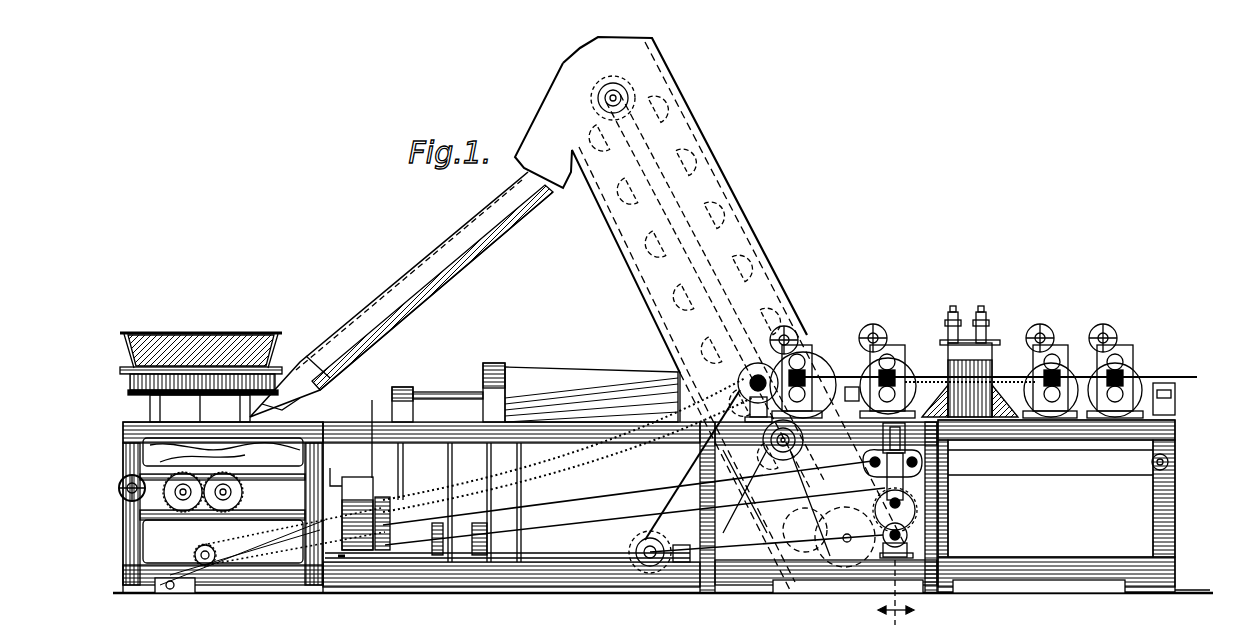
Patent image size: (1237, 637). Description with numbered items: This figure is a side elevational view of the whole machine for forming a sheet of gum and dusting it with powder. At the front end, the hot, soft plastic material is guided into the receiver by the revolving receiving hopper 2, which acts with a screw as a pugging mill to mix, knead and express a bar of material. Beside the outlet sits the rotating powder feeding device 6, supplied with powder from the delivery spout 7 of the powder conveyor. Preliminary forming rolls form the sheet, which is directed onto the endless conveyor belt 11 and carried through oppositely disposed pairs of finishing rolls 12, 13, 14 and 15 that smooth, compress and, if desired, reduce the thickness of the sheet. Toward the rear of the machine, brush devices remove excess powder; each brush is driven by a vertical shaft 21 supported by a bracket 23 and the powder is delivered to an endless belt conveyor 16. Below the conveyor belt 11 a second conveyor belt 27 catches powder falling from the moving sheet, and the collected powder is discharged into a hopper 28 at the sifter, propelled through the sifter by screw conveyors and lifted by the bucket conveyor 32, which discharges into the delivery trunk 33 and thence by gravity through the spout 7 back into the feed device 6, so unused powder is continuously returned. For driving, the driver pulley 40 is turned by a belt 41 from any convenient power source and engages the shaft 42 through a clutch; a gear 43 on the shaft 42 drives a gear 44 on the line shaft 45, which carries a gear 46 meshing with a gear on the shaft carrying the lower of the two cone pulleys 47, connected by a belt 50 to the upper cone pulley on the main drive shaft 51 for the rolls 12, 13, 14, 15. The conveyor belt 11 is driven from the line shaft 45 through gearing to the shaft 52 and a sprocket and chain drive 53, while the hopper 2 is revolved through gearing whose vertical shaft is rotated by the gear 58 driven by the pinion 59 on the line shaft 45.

The revolving receiving hopper 2 is at (262, 340).
The rotating powder feeding device 6 is at (245, 446).
The delivery spout 7 is at (308, 402).
The endless conveyor belt 11 is at (548, 462).
The finishing rolls 12 is at (812, 372).
The finishing rolls 13 is at (900, 360).
The finishing rolls 14 is at (1070, 370).
The finishing rolls 15 is at (1130, 370).
The endless belt conveyor 16 is at (1012, 450).
The vertical shaft 21 is at (981, 320).
The bracket 23 is at (993, 355).
The second conveyor belt 27 is at (646, 492).
The hopper 28 is at (905, 483).
The bucket conveyor 32 is at (757, 263).
The delivery trunk 33 is at (505, 242).
The driver pulley 40 is at (338, 466).
The belt 41 is at (357, 505).
The shaft 42 is at (350, 558).
The gear 43 is at (370, 427).
The gear 44 is at (390, 593).
The line shaft 45 is at (362, 560).
The gear 46 is at (440, 558).
The cone pulleys 47 is at (574, 378).
The belt 50 is at (497, 364).
The main drive shaft 51 is at (432, 396).
The shaft 52 is at (652, 563).
The sprocket and chain drive 53 is at (668, 504).
The gear 58 is at (190, 548).
The pinion 59 is at (268, 562).